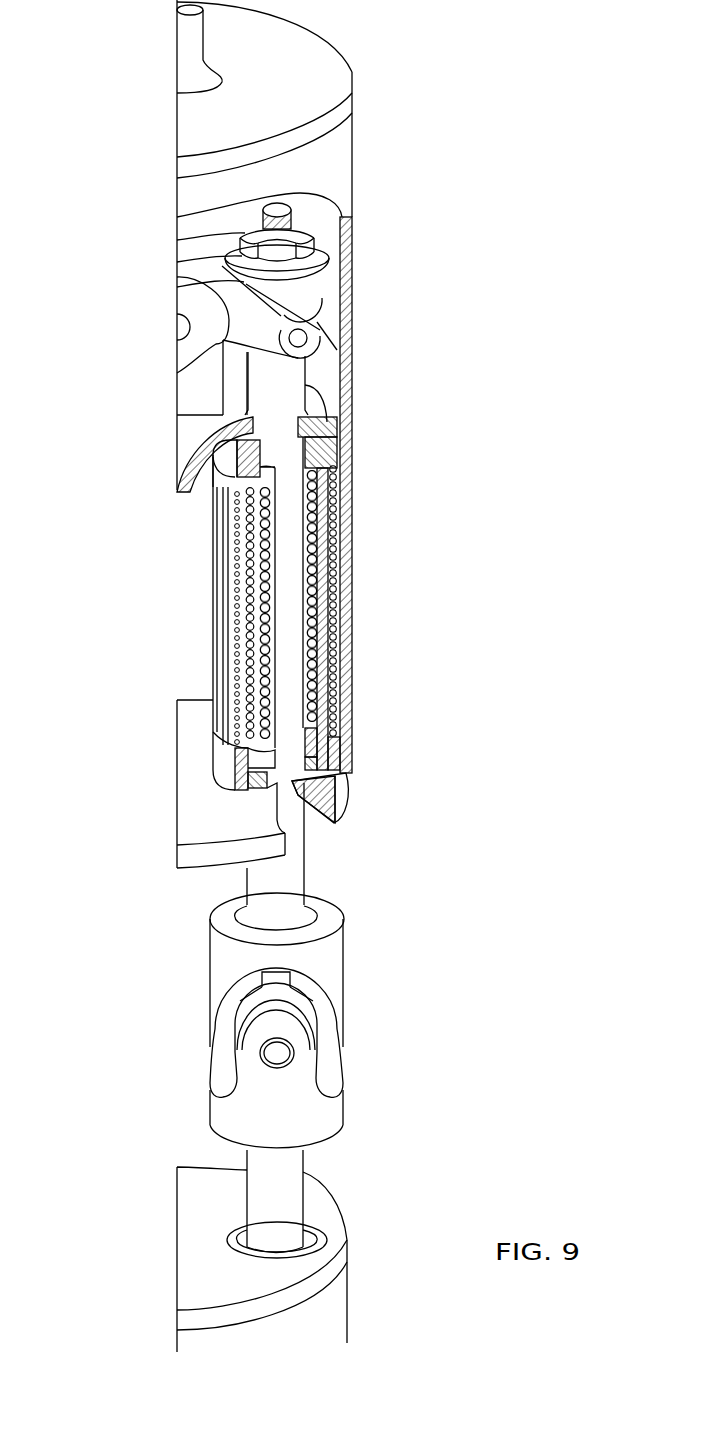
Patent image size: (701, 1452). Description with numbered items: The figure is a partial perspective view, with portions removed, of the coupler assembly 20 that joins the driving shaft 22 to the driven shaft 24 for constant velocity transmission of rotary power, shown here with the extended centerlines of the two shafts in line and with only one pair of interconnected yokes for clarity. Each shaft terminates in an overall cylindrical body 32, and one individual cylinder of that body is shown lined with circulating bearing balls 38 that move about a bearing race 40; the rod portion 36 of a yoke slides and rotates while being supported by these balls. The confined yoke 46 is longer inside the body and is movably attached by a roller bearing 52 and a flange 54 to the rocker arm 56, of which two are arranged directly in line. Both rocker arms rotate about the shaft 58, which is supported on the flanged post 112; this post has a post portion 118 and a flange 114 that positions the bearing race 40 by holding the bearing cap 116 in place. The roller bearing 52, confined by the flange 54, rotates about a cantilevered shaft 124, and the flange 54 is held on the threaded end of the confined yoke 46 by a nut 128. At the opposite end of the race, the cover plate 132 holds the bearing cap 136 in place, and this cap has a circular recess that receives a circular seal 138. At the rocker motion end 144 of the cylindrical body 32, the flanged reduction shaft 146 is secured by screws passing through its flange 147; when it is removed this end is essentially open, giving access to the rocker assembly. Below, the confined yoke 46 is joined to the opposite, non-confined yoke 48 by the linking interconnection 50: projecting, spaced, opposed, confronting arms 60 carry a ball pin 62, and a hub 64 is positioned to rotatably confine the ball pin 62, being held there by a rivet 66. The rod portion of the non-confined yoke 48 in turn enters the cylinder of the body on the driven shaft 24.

The flanged reduction shaft 146 is at (176, 59).
The flange 147 is at (352, 95).
The rocker motion end 144 is at (352, 157).
The overall cylindrical body 32 is at (354, 222).
The driving shaft 22 is at (354, 487).
The nut 128 is at (312, 245).
The flange 54 is at (329, 271).
The roller bearing 52 is at (330, 305).
The cantilevered shaft 124 is at (309, 340).
The post portion 118 is at (177, 258).
The rocker arm 56 is at (197, 238).
The shaft 58 is at (177, 330).
The flanged post 112 is at (176, 396).
The rod portion 36 is at (291, 425).
The flange 114 is at (177, 477).
The bearing cap 116 is at (338, 457).
The bearing race 40 is at (341, 544).
The bearing ball 38 is at (329, 591).
The bearing cap 136 is at (339, 741).
The circular seal 138 is at (347, 767).
The cover plate 132 is at (354, 795).
The confined yoke 46 is at (305, 850).
The coupler assembly 20 is at (345, 930).
The arm 60 is at (345, 993).
The rivet 66 is at (255, 975).
The hub 64 is at (237, 1010).
The ball pin 62 is at (294, 1056).
The linking interconnection 50 is at (258, 1053).
The non-confined yoke 48 is at (305, 1172).
The driven shaft 24 is at (349, 1290).